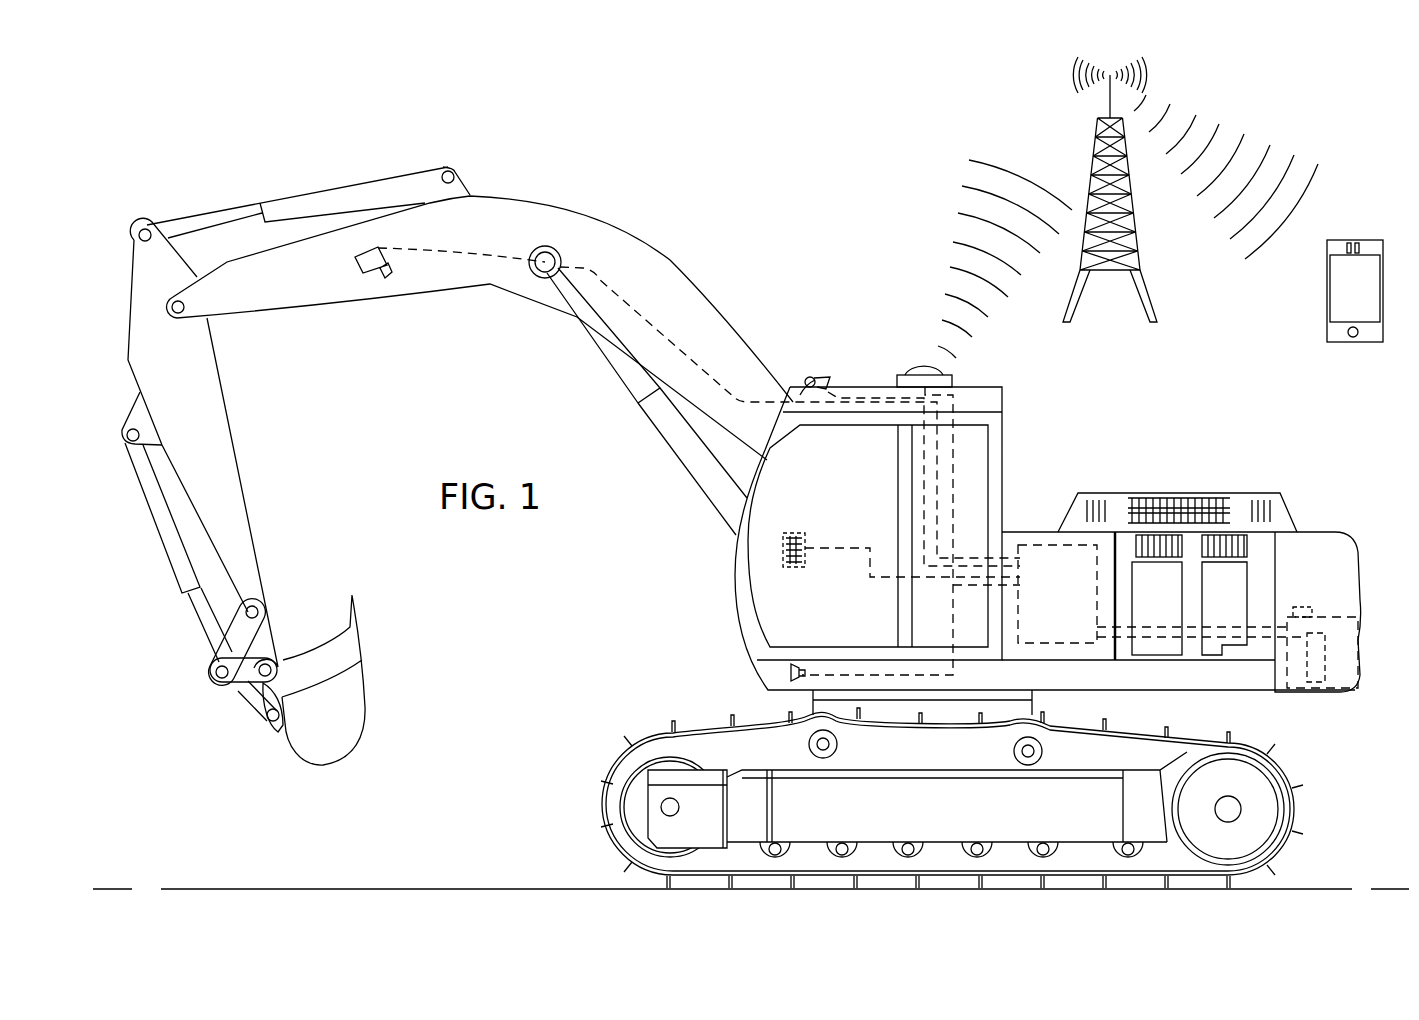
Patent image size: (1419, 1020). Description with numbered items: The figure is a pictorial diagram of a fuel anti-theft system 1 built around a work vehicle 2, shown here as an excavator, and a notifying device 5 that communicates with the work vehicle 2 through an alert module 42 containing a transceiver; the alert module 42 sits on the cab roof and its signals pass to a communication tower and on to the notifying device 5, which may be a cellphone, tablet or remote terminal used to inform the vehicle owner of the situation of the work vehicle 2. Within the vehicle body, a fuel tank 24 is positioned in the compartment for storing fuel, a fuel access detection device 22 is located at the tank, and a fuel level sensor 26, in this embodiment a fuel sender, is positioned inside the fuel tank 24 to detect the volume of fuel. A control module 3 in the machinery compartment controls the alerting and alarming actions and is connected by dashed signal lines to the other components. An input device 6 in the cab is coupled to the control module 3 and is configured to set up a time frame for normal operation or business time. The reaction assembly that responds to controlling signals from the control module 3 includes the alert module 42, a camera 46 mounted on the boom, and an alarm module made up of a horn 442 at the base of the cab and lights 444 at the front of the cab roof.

The fuel anti-theft system 1 is at (728, 112).
The work vehicle 2 is at (273, 158).
The control module 3 is at (1066, 603).
The notifying device 5 is at (1370, 240).
The input device 6 is at (793, 533).
The fuel access detection device 22 is at (1303, 606).
The fuel tank 24 is at (1330, 616).
The fuel level sensor 26 is at (1328, 672).
The alert module 42 is at (913, 362).
The camera 46 is at (370, 273).
The horn 442 is at (790, 672).
The lights 444 is at (811, 377).